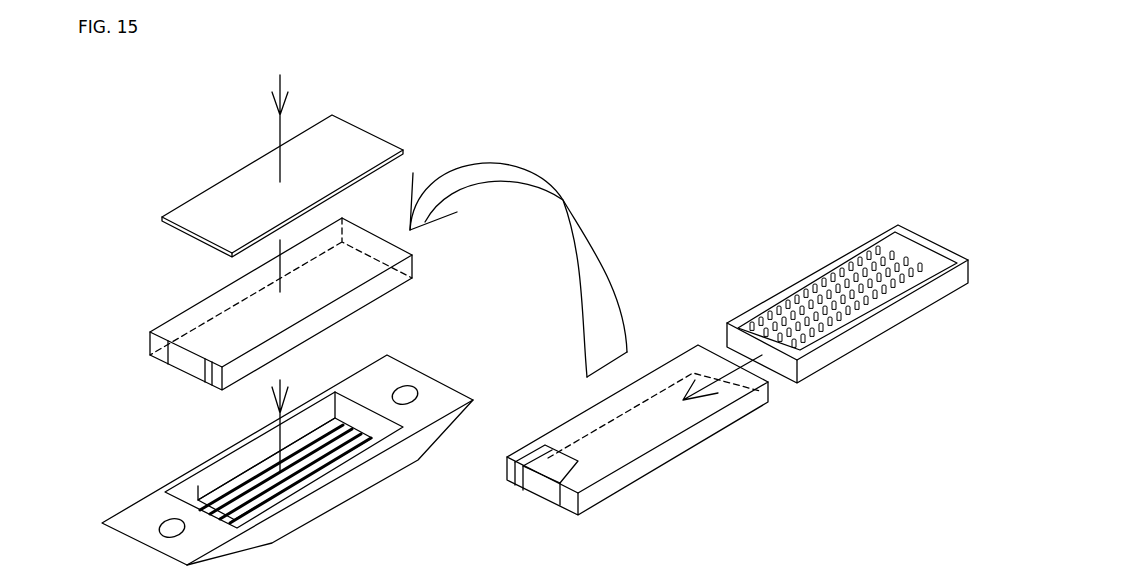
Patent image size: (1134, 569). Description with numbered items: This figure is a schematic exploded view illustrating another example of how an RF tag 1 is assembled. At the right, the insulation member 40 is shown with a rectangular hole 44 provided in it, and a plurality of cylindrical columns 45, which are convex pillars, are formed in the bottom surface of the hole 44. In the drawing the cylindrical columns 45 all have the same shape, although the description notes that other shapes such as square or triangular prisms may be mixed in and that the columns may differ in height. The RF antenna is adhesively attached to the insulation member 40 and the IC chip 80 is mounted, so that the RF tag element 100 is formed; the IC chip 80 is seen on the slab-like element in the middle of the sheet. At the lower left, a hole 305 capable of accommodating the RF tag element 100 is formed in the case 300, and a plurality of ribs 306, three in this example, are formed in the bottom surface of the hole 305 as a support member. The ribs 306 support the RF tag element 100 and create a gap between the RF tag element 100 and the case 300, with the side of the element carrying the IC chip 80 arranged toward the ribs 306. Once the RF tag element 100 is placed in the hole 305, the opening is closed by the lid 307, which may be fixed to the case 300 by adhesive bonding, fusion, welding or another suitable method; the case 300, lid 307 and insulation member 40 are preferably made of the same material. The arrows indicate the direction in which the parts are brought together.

The RF tag 1 is at (117, 131).
The lid 307 is at (343, 122).
The RF tag element 100 is at (343, 224).
The case 300 is at (438, 378).
The hole 305 is at (197, 507).
The ribs 306 is at (296, 478).
The IC chip 80 is at (548, 458).
The insulation member 40 is at (953, 238).
The rectangular hole 44 is at (885, 240).
The cylindrical columns 45 is at (795, 295).